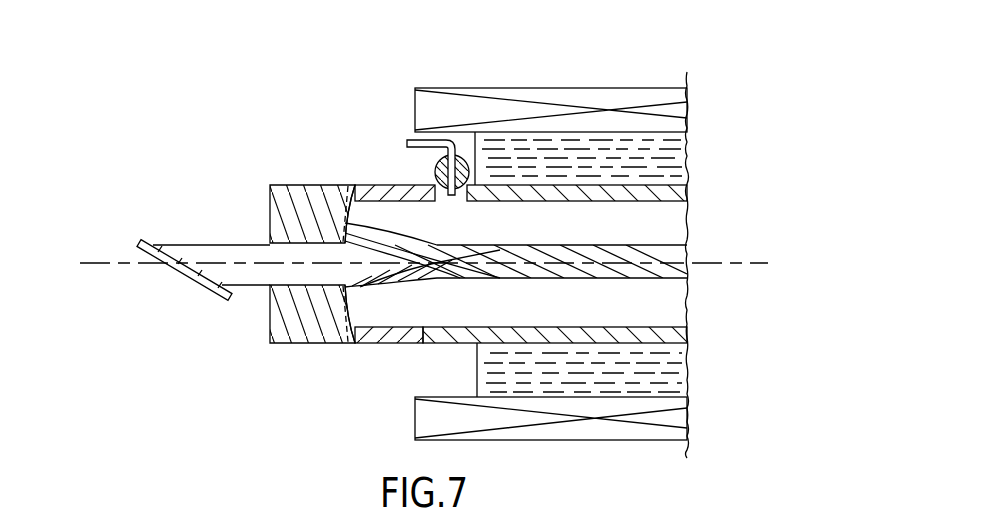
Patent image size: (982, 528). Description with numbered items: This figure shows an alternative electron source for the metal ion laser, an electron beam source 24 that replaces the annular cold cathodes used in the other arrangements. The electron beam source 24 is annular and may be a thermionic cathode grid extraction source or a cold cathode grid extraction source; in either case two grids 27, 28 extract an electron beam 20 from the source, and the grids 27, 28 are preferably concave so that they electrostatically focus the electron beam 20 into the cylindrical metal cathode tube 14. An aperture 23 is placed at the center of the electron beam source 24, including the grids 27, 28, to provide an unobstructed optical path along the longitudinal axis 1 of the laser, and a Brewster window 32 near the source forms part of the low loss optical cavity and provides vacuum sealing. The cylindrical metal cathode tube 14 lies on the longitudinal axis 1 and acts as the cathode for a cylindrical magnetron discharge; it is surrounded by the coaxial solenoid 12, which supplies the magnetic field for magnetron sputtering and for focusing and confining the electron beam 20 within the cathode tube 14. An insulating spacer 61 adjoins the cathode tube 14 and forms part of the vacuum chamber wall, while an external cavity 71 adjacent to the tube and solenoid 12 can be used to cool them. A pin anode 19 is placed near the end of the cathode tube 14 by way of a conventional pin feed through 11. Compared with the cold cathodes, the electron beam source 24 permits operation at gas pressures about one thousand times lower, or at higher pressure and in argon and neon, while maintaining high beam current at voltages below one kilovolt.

The longitudinal axis 1 is at (733, 258).
The pin feed through 11 is at (437, 170).
The solenoid 12 is at (573, 93).
The cylindrical metal cathode tube 14 is at (668, 335).
The pin anode 19 is at (437, 188).
The electron beam 20 is at (630, 253).
The aperture 23 is at (302, 262).
The electron beam source 24 is at (288, 322).
The grid 27 is at (340, 322).
The grid 28 is at (357, 335).
The Brewster window 32 is at (197, 282).
The insulating spacer 61 is at (398, 333).
The external cavity 71 is at (678, 152).